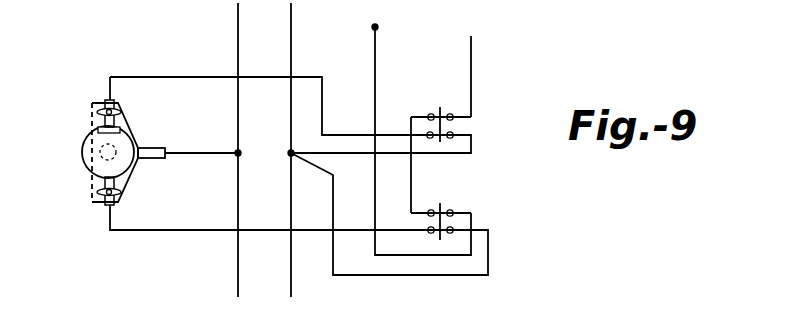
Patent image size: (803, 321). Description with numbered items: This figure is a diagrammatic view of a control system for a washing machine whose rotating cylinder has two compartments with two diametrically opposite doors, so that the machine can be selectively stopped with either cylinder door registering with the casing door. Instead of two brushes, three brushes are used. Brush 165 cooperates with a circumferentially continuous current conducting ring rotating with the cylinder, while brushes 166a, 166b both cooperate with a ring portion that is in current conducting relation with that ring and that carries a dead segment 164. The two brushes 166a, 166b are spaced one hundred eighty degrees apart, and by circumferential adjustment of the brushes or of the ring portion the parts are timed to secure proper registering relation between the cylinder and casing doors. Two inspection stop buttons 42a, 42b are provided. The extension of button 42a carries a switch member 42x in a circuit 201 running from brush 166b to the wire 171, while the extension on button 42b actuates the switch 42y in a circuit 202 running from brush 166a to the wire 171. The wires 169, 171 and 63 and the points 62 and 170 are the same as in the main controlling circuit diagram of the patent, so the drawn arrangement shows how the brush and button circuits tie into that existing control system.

The point 62 is at (375, 27).
The wire 63 is at (471, 70).
The inspection stop button 42a is at (452, 124).
The switch member 42x is at (441, 142).
The inspection stop button 42b is at (458, 214).
The switch 42y is at (442, 238).
The dead segment 164 is at (121, 131).
The brush 165 is at (156, 159).
The brush 166a is at (97, 192).
The brush 166b is at (100, 114).
The wire 169 is at (237, 268).
The point 170 is at (237, 152).
The wire 171 is at (291, 285).
The circuit 201 is at (276, 79).
The circuit 202 is at (262, 229).